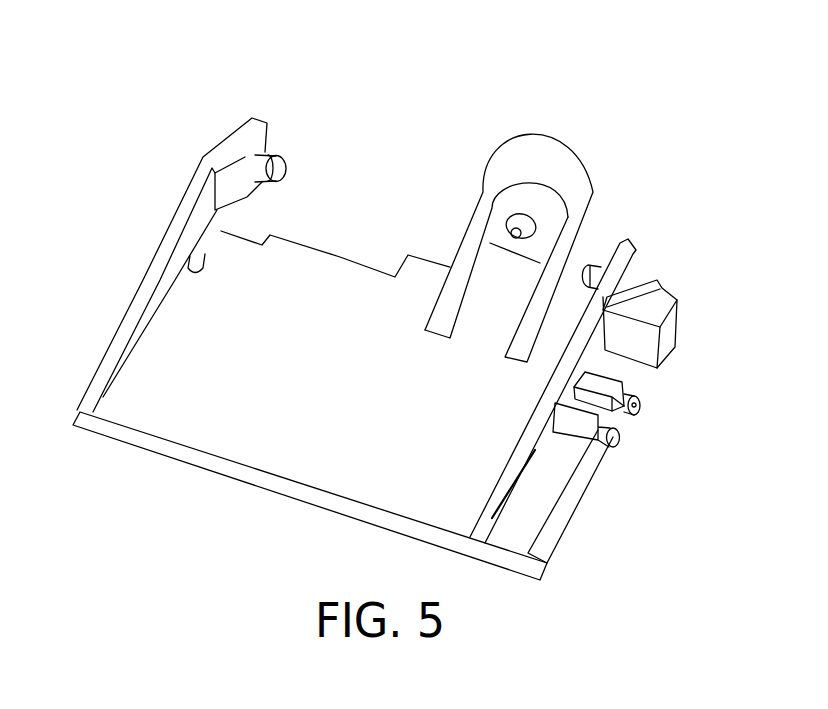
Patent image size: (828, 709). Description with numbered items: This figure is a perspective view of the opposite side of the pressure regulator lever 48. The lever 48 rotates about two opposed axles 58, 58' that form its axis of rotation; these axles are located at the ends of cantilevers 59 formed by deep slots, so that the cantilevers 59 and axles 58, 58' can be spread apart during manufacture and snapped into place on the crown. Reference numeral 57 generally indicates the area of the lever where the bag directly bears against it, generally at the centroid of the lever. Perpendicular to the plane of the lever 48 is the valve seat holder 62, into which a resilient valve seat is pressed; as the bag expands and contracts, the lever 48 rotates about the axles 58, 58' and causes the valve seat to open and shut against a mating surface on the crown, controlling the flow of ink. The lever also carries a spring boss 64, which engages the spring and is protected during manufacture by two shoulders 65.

The pressure regulator lever 48 is at (172, 116).
The bag bearing area 57 is at (265, 447).
The axle 58 is at (285, 153).
The axle 58' is at (623, 247).
The cantilever 59 is at (195, 193).
The valve seat holder 62 is at (467, 246).
The spring boss 64 is at (641, 409).
The shoulder 65 is at (603, 473).